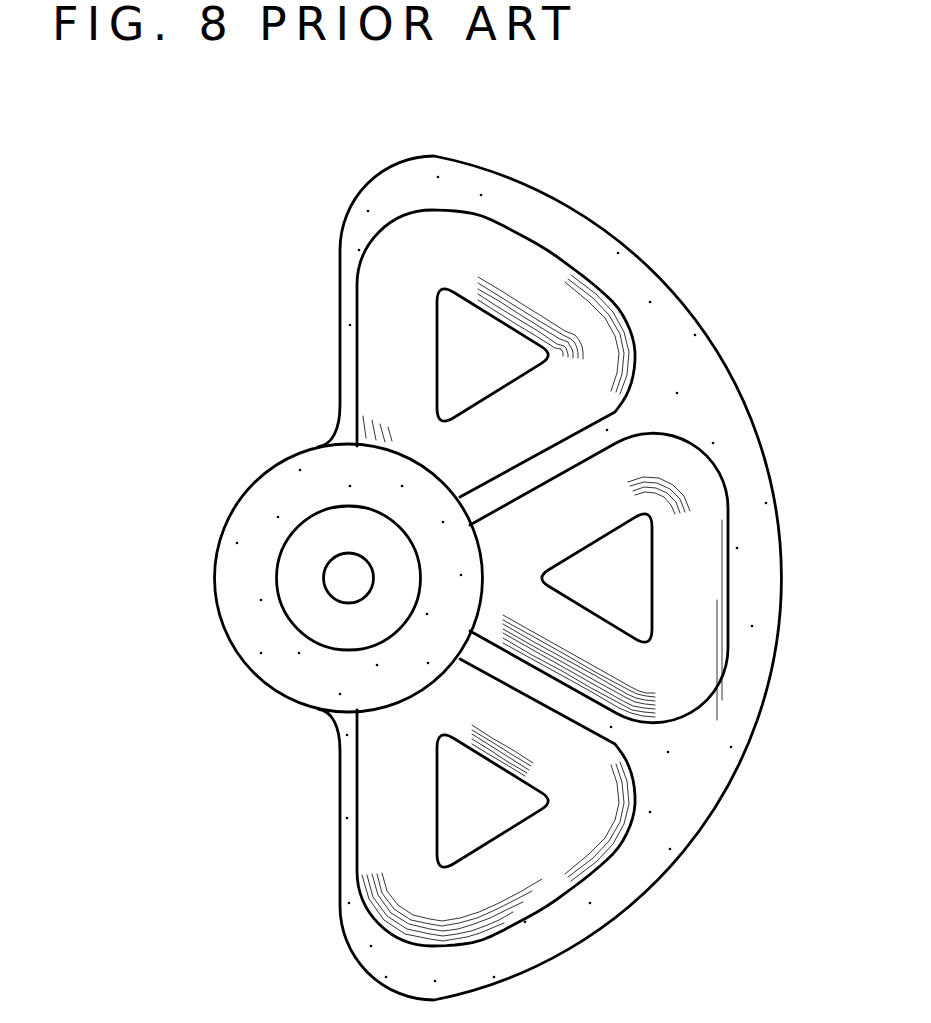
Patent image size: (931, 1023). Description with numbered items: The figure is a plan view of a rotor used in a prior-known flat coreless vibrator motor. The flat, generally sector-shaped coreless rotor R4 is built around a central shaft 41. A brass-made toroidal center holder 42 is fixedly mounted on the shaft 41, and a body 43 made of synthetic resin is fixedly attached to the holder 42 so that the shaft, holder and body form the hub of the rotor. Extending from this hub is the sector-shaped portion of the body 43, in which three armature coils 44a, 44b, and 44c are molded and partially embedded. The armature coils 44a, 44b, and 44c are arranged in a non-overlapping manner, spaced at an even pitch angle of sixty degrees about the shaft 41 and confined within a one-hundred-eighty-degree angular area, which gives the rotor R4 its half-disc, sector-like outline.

The coreless rotor R4 is at (256, 251).
The shaft 41 is at (337, 575).
The center holder 42 is at (312, 623).
The body 43 is at (712, 398).
The armature coil 44a is at (572, 303).
The armature coil 44b is at (685, 597).
The armature coil 44c is at (555, 872).